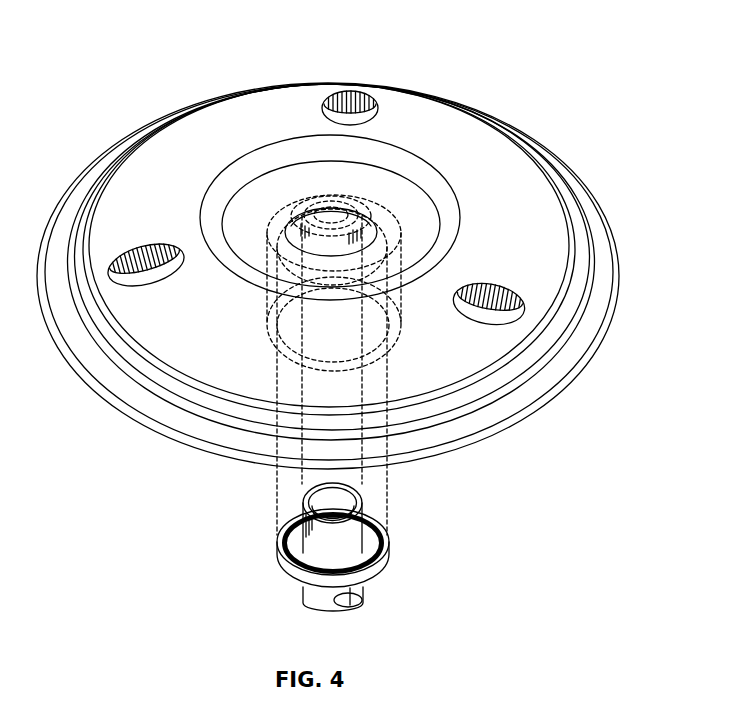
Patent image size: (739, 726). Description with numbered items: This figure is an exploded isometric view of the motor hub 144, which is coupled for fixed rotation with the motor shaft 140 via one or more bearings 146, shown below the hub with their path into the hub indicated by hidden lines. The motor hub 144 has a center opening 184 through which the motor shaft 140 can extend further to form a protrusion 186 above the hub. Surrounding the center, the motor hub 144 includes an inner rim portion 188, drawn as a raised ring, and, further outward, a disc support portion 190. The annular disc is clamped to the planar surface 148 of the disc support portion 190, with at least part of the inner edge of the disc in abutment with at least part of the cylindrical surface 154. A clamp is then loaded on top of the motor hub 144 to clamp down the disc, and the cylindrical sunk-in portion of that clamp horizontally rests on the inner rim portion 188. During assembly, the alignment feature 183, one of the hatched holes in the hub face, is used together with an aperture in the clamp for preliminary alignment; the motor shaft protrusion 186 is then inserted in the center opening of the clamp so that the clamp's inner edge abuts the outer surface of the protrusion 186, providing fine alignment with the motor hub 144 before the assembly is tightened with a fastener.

The motor hub 144 is at (461, 75).
The planar surface 148 is at (600, 248).
The cylindrical surface 154 is at (77, 258).
The disc support portion 190 is at (545, 386).
The alignment feature 183 is at (346, 112).
The center opening 184 is at (331, 221).
The protrusion 186 is at (318, 238).
The inner rim portion 188 is at (393, 197).
The motor shaft 140 is at (343, 540).
The bearings 146 is at (290, 573).